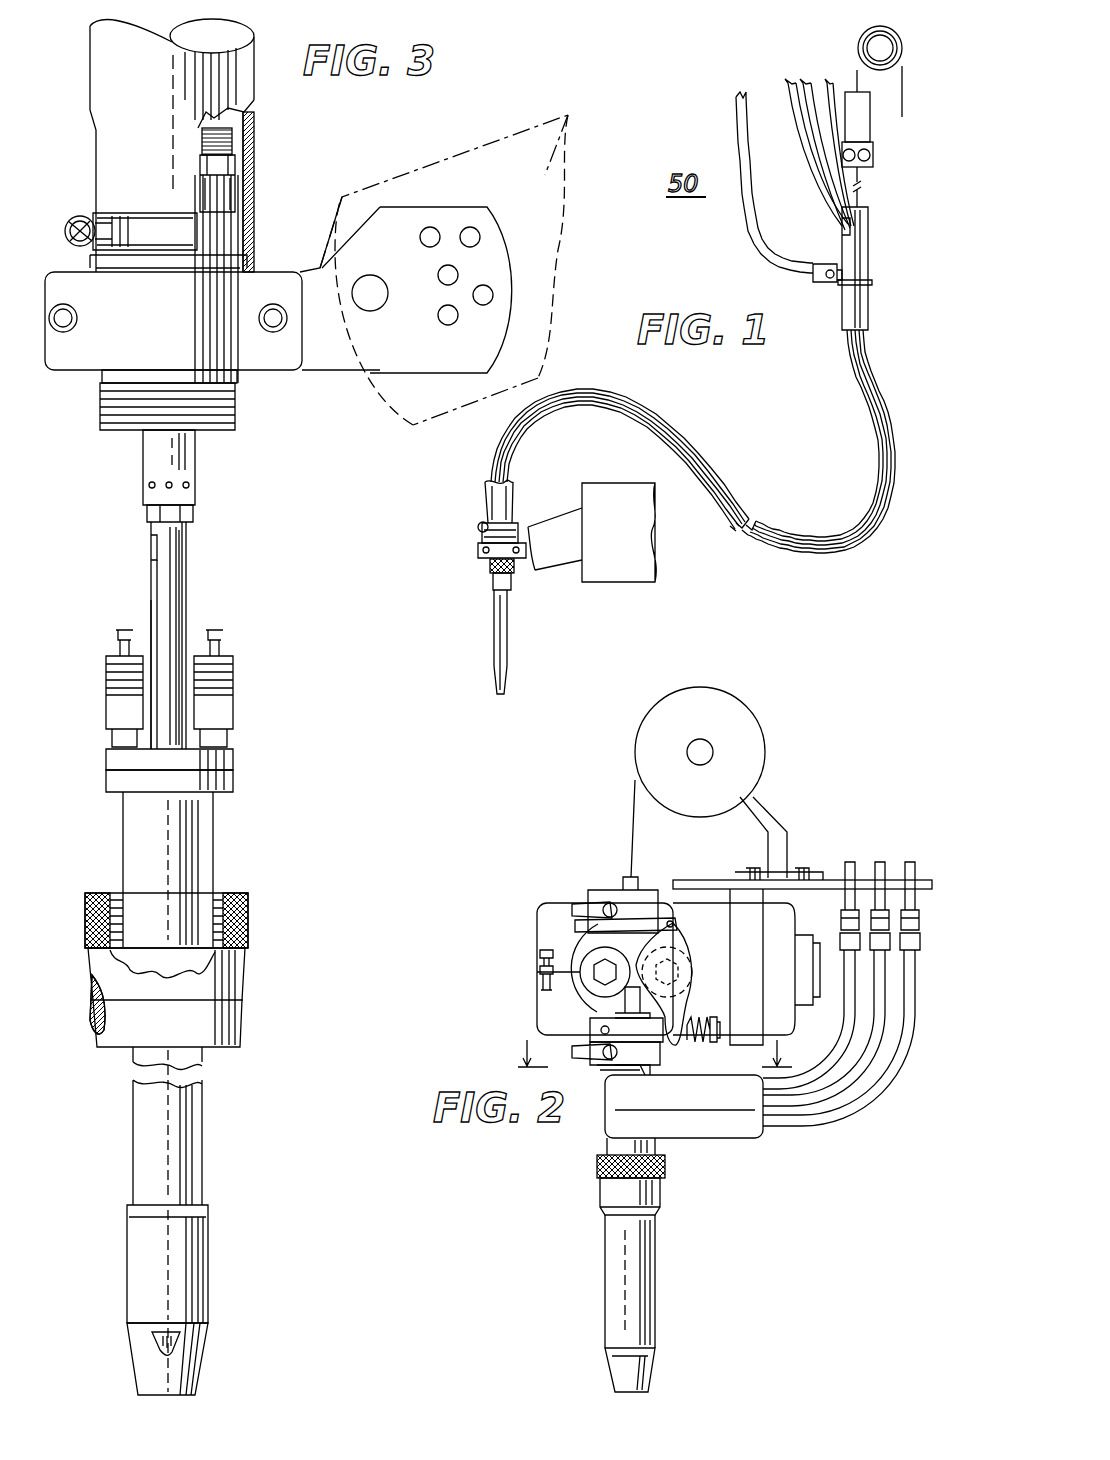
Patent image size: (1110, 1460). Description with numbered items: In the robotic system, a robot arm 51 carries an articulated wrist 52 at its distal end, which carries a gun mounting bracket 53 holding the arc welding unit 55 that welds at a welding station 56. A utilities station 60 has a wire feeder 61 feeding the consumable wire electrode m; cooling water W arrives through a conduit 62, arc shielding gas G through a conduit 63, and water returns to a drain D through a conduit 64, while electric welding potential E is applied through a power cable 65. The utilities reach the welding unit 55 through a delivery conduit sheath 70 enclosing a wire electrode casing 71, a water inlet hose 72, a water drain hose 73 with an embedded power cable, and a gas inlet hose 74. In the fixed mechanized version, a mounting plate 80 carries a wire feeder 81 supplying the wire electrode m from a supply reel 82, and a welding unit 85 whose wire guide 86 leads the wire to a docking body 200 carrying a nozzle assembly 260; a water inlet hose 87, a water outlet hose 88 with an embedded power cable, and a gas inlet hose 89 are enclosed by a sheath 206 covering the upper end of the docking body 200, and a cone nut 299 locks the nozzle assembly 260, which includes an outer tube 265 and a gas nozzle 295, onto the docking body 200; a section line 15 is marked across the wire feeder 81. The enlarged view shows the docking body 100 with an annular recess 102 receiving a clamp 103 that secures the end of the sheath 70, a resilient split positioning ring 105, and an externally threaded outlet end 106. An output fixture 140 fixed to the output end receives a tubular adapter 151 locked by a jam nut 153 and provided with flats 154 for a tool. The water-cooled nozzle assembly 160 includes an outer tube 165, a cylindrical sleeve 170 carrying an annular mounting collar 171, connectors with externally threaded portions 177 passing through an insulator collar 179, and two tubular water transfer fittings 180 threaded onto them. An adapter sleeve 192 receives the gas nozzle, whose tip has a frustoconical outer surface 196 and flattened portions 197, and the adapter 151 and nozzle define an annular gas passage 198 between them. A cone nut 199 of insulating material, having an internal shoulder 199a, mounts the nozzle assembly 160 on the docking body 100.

In FIG. 1, the robot arm 51 is at (660, 580).
In FIG. 3, the articulated wrist 52 is at (540, 118).
In FIG. 1, the articulated wrist 52 is at (555, 578).
In FIG. 3, the gun mounting bracket 53 is at (60, 368).
In FIG. 1, the gun mounting bracket 53 is at (476, 552).
In FIG. 3, the arc welding unit 55 is at (310, 690).
In FIG. 1, the arc welding unit 55 is at (467, 514).
In FIG. 1, the welding station 56 is at (548, 667).
In FIG. 1, the utilities station 60 is at (882, 232).
In FIG. 1, the wire feeder 61 is at (870, 132).
In FIG. 1, the conduit 62 is at (873, 168).
In FIG. 1, the conduit 63 is at (810, 140).
In FIG. 1, the conduit 64 is at (793, 118).
In FIG. 1, the power cable 65 is at (740, 232).
In FIG. 3, the delivery conduit sheath 70 is at (92, 112).
In FIG. 1, the delivery conduit sheath 70 is at (512, 500).
In FIG. 1, the wire electrode casing 71 is at (878, 388).
In FIG. 1, the water inlet hose 72 is at (840, 540).
In FIG. 1, the water drain hose 73 is at (798, 530).
In FIG. 1, the gas inlet hose 74 is at (786, 556).
In FIG. 2, the fixed mounting plate 80 is at (700, 880).
In FIG. 2, the wire feeder 81 is at (522, 963).
In FIG. 2, the supply reel 82 is at (760, 752).
In FIG. 2, the welding unit 85 is at (590, 1247).
In FIG. 2, the wire guide 86 is at (640, 998).
In FIG. 2, the water inlet hose 87 is at (930, 832).
In FIG. 2, the water outlet hose 88 is at (880, 862).
In FIG. 2, the gas inlet hose 89 is at (850, 862).
In FIG. 3, the docking body 100 is at (248, 372).
In FIG. 1, the docking body 100 is at (468, 539).
In FIG. 3, the annular channel or recess 102 is at (186, 225).
In FIG. 3, the clamp 103 is at (128, 212).
In FIG. 3, the resilient split positioning ring 105 is at (258, 268).
In FIG. 3, the externally threaded portion 106 is at (236, 430).
In FIG. 3, the output fixture 140 is at (130, 480).
In FIG. 3, the tubular adapter 151 is at (188, 588).
In FIG. 3, the jam nut 153 is at (190, 513).
In FIG. 3, the flats 154 is at (150, 548).
In FIG. 3, the water-cooled nozzle assembly 160 is at (246, 840).
In FIG. 1, the water-cooled nozzle assembly 160 is at (484, 644).
In FIG. 3, the outer tube 165 is at (128, 1140).
In FIG. 3, the cylindrical sleeve 170 is at (122, 850).
In FIG. 3, the annular mounting collar 171 is at (118, 790).
In FIG. 3, the externally threaded portion 177 is at (226, 750).
In FIG. 3, the annular insulator collar 179 is at (108, 762).
In FIG. 3, the tubular water transfer fittings 180 is at (95, 690).
In FIG. 3, the adapter sleeve 192 is at (208, 1255).
In FIG. 3, the frustoconical outer surface 196 is at (204, 1368).
In FIG. 3, the flattened portions 197 is at (160, 1345).
In FIG. 3, the annular gas passage 198 is at (151, 630).
In FIG. 3, the cone nut 199 is at (244, 978).
In FIG. 1, the cone nut 199 is at (488, 578).
In FIG. 3, the internal shoulder 199a is at (90, 988).
In FIG. 2, the docking body 200 is at (592, 1154).
In FIG. 2, the sheath 206 is at (700, 1138).
In FIG. 2, the nozzle assembly 260 is at (667, 1281).
In FIG. 2, the cylindrical outer tube 265 is at (603, 1300).
In FIG. 2, the cylindrical gas nozzle 295 is at (655, 1370).
In FIG. 2, the cone nut 299 is at (662, 1192).
In FIG. 1, the wire electrode m is at (900, 60).
In FIG. 2, the wire electrode m is at (630, 815).
In FIG. 1, the electric welding potential E is at (737, 93).
In FIG. 1, the drain D is at (790, 82).
In FIG. 1, the arc shielding gas G is at (807, 82).
In FIG. 1, the cooling water W is at (831, 82).
In FIG. 2, the section line 15 is at (650, 1053).